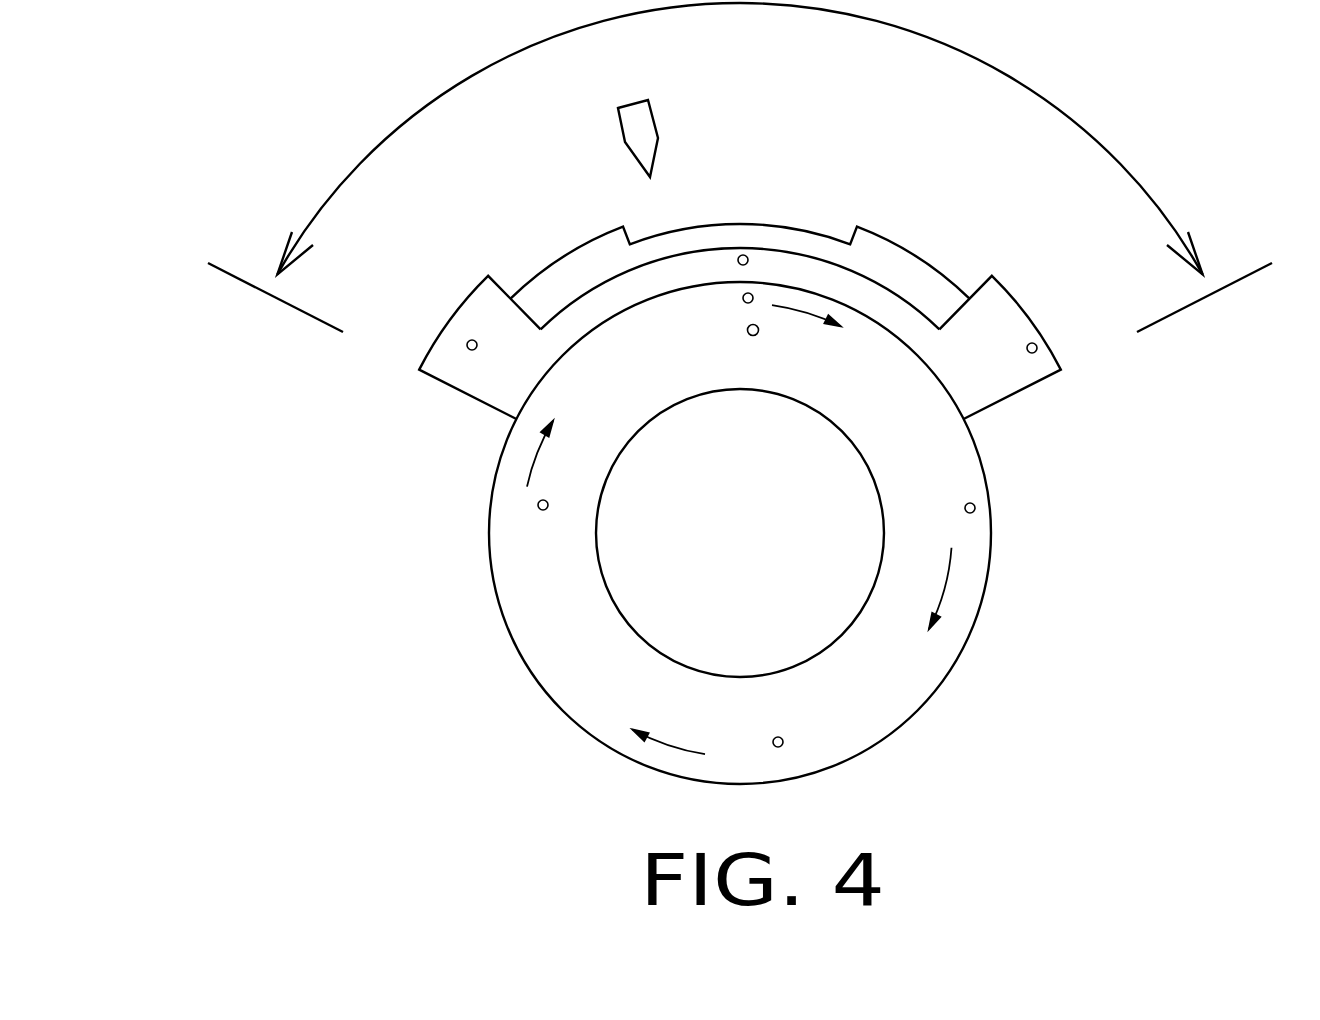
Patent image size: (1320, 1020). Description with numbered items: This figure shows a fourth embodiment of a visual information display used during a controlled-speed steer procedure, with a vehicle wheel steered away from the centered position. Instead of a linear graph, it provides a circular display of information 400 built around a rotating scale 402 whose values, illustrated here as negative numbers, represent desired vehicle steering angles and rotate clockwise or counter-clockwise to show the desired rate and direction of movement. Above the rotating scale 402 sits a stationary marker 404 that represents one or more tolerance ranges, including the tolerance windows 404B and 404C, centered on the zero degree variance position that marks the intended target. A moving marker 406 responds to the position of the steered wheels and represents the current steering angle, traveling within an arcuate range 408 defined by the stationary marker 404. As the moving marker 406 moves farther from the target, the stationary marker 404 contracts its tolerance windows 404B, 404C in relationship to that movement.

The circular display of information 400 is at (438, 532).
The rotating scale values 402 is at (765, 345).
The stationary marker 404 is at (768, 251).
The tolerance range 404B is at (719, 229).
The tolerance range 404C is at (768, 339).
The moving marker 406 is at (617, 138).
The arcuate range 408 is at (373, 147).